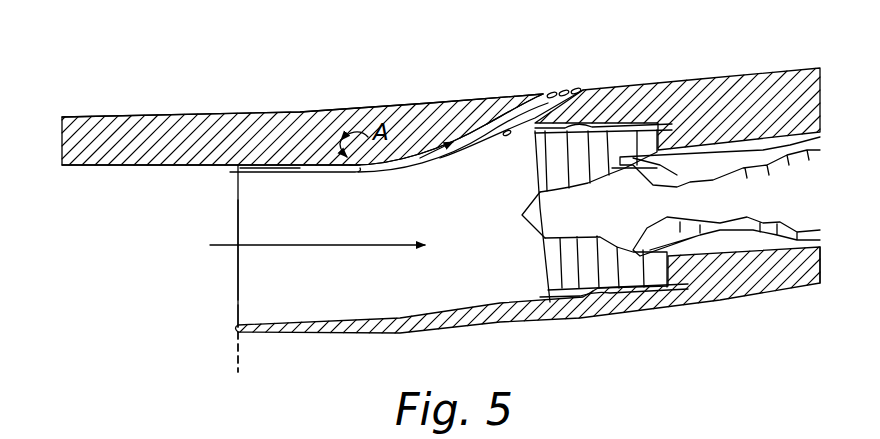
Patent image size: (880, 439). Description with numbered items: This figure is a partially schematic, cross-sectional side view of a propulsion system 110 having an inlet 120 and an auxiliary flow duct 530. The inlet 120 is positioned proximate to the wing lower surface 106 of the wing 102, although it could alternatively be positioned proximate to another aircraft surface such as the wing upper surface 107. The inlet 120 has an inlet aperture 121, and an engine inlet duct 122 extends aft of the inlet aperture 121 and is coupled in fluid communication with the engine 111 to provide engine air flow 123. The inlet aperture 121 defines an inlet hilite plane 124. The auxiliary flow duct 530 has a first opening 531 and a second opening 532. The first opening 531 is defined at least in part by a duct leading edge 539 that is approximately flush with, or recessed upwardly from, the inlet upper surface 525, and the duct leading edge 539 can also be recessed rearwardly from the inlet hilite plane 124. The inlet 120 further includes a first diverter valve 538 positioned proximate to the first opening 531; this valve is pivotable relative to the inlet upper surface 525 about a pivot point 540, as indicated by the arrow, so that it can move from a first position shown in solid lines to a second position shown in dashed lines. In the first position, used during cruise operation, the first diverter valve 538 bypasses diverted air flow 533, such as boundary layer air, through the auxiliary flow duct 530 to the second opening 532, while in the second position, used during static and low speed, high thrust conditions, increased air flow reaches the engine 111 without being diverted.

The wing 102 is at (110, 124).
The wing lower surface 106 is at (83, 165).
The wing upper surface 107 is at (143, 117).
The propulsion system 110 is at (656, 340).
The engine 111 is at (640, 138).
The inlet 120 is at (225, 299).
The inlet aperture 121 is at (236, 313).
The engine inlet duct 122 is at (407, 292).
The engine air flow 123 is at (213, 247).
The inlet hilite plane 124 is at (240, 371).
The inlet upper surface 525 is at (260, 167).
The auxiliary flow duct 530 is at (500, 117).
The first opening 531 is at (390, 176).
The second opening 532 is at (550, 84).
The diverted air flow 533 is at (268, 178).
The first diverter valve 538 is at (360, 170).
The duct leading edge 539 is at (443, 157).
The pivot point 540 is at (324, 162).